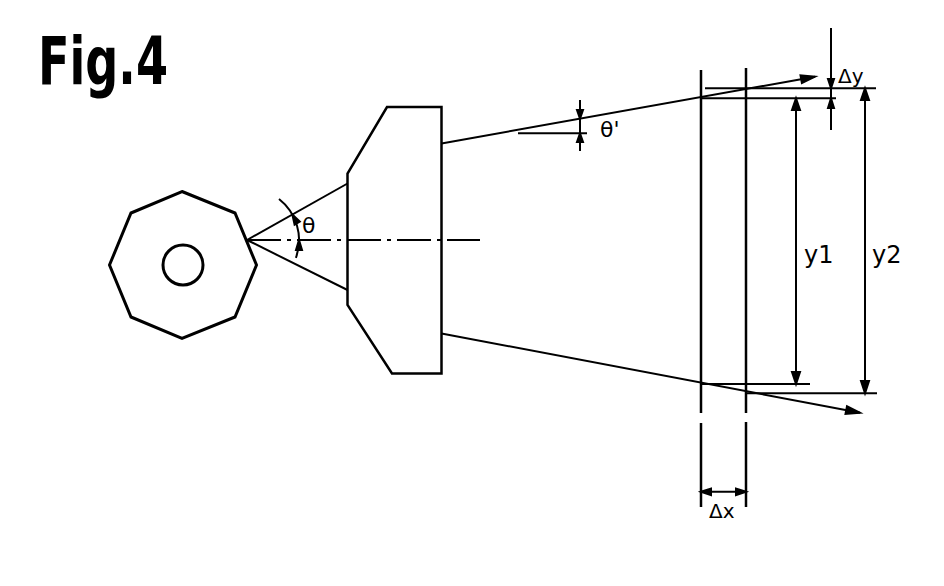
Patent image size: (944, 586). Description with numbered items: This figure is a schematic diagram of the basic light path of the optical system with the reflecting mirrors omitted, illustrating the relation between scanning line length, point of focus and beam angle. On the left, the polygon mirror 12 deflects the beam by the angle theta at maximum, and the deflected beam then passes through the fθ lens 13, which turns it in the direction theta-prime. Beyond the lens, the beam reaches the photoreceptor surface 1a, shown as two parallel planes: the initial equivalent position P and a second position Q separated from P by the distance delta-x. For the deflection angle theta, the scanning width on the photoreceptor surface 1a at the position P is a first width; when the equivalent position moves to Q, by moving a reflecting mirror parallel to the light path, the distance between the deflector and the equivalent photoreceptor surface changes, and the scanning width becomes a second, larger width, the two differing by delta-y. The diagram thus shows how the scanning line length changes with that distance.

The polygon mirror 12 is at (172, 193).
The fθ lens 13 is at (420, 107).
The photoreceptor surface 1a is at (701, 193).